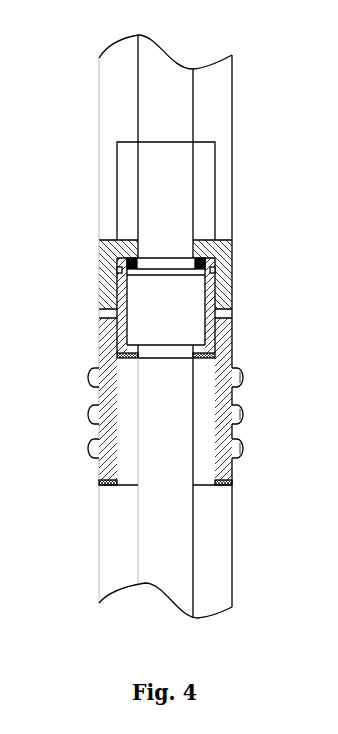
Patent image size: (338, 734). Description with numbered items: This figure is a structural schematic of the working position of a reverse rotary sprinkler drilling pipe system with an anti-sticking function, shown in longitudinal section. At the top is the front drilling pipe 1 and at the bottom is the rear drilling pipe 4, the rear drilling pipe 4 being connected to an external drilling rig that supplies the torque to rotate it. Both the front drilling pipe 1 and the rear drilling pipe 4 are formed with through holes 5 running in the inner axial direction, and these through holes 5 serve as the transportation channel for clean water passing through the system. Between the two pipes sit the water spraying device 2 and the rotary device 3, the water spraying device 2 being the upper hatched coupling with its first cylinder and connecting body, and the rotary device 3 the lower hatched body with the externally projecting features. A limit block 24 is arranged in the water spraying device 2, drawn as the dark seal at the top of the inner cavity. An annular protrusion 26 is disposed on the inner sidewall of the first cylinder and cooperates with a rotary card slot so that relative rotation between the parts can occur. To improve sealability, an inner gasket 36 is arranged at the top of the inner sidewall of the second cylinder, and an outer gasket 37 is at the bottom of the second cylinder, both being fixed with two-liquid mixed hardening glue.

The front drilling pipe 1 is at (218, 133).
The water spraying device 2 is at (220, 260).
The rotary device 3 is at (237, 371).
The rear drilling pipe 4 is at (218, 547).
The through holes 5 is at (170, 108).
The limit block 24 is at (128, 259).
The annular protrusion 26 is at (120, 271).
The inner gasket 36 is at (101, 376).
The outer gasket 37 is at (102, 487).